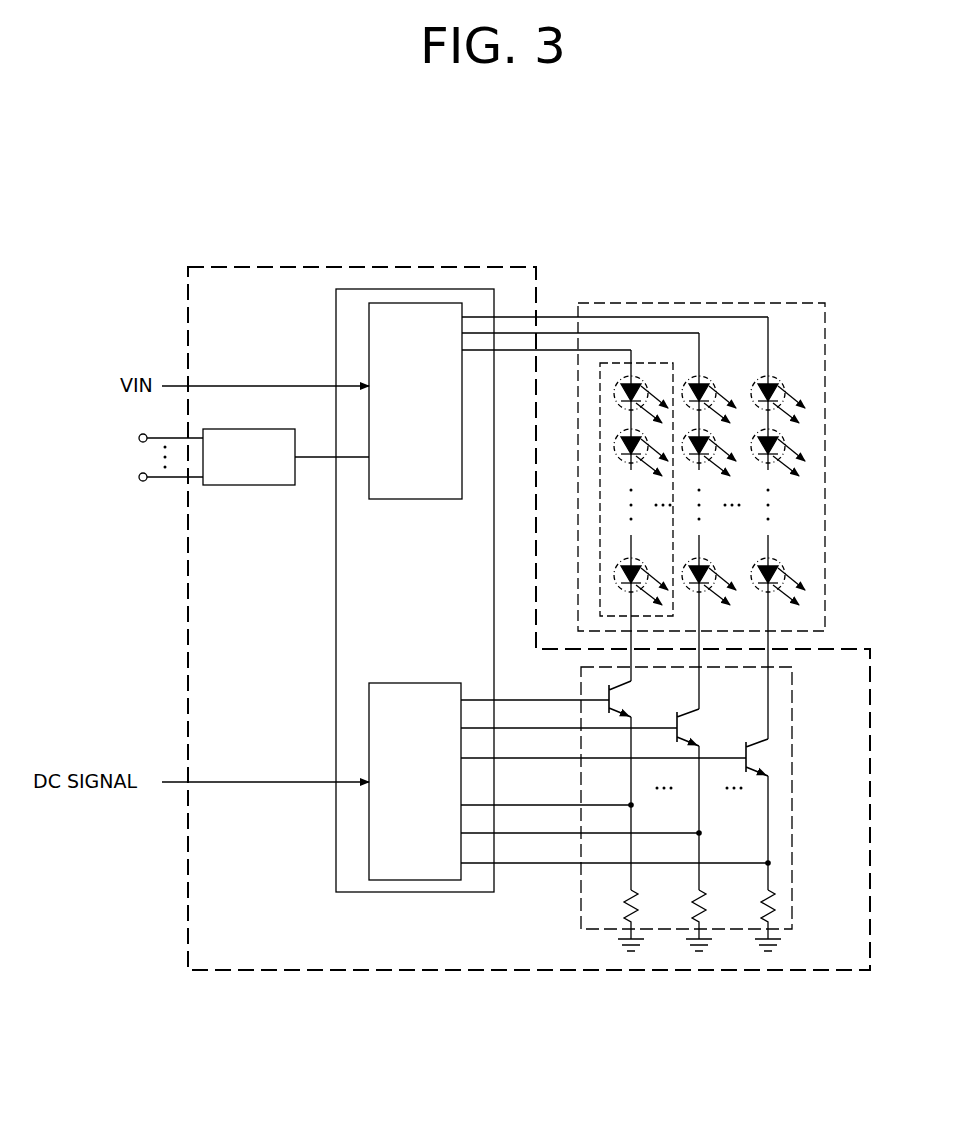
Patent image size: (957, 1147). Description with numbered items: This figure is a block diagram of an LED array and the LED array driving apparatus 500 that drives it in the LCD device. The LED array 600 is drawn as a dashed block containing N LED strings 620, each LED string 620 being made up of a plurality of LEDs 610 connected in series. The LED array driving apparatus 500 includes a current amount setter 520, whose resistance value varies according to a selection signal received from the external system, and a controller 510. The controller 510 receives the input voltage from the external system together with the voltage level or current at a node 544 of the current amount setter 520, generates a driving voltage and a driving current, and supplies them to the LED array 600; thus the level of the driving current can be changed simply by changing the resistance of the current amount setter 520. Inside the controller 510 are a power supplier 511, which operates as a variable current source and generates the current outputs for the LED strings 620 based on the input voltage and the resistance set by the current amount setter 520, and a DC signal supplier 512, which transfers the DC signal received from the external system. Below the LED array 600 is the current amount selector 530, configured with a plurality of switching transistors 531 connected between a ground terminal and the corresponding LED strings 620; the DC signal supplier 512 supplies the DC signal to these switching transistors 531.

The LED array driving apparatus 500 is at (466, 266).
The controller 510 is at (552, 590).
The power supplier 511 is at (568, 401).
The DC signal supplier 512 is at (568, 781).
The current amount setter 520 is at (249, 457).
The node 544 is at (296, 459).
The LED array 600 is at (782, 303).
The LED 610 is at (712, 376).
The LED string 620 is at (645, 362).
The current amount selector 530 is at (792, 700).
The switching transistor 531 is at (762, 746).